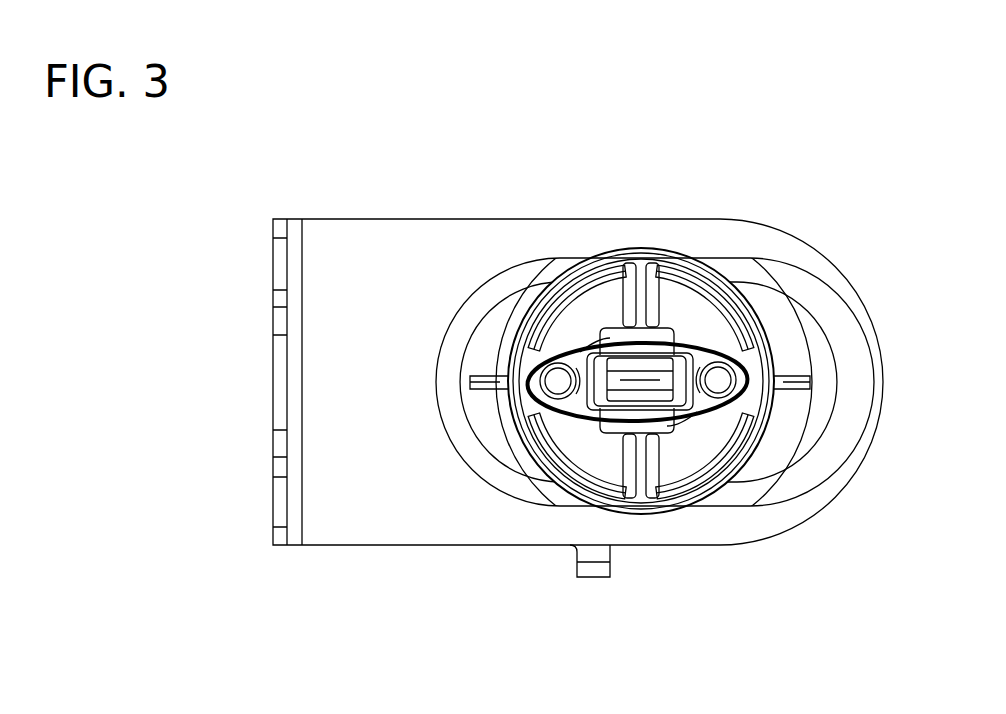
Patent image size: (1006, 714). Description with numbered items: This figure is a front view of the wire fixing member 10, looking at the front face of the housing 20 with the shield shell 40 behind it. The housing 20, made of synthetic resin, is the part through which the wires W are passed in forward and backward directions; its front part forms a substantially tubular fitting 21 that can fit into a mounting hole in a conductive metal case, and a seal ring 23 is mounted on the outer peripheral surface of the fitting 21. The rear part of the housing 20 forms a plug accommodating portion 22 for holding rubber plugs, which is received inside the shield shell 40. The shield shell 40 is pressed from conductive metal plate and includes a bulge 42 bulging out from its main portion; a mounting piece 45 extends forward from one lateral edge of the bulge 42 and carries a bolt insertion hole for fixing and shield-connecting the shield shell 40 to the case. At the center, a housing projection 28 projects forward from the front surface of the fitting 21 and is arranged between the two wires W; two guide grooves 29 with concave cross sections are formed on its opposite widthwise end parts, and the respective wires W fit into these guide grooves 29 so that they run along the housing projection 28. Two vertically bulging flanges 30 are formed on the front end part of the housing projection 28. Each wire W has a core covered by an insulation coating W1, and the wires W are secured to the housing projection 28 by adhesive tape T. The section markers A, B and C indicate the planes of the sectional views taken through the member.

The wire fixing member 10 is at (507, 152).
The housing 20 is at (691, 246).
The fitting 21 is at (732, 462).
The plug accommodating portion 22 is at (473, 389).
The seal ring 23 is at (622, 356).
The housing projection 28 is at (630, 357).
The guide groove 29 is at (557, 355).
The flange 30 is at (635, 406).
The shield shell 40 is at (855, 254).
The bulge 42 is at (366, 243).
The mounting piece 45 is at (274, 547).
The adhesive tape T is at (746, 366).
The wire W is at (528, 398).
The insulation coating W1 is at (543, 352).
The section line A is at (640, 197).
The section line B is at (718, 200).
The section line C is at (242, 383).